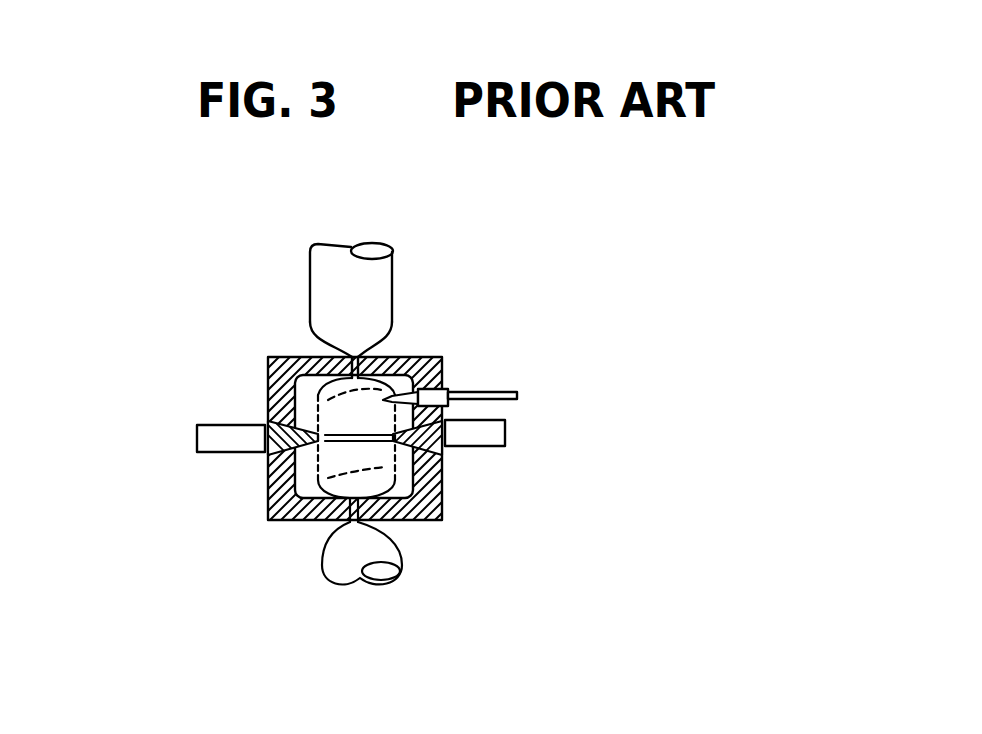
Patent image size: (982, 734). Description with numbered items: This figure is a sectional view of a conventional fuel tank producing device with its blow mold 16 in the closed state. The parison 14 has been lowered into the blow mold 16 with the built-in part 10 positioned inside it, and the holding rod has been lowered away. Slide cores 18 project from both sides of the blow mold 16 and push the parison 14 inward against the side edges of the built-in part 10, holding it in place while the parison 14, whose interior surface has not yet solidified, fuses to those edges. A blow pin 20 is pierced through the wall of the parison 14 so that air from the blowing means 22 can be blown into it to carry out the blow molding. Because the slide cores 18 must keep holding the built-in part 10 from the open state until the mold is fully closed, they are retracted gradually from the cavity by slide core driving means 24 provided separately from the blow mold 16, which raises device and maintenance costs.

The built-in part 10 is at (413, 505).
The parison 14 is at (430, 296).
The blow mold 16 is at (268, 350).
The slide cores 18 is at (365, 481).
The blow pin 20 is at (495, 353).
The blowing means 22 is at (513, 380).
The slide core driving means 24 is at (351, 434).